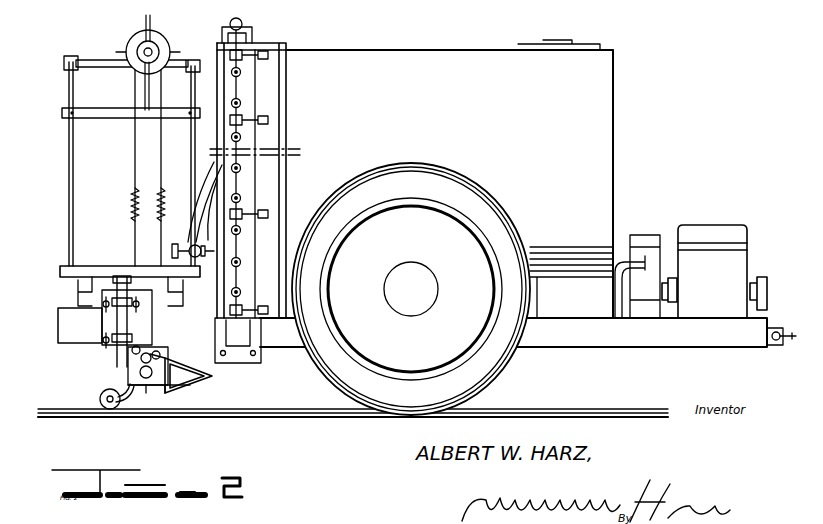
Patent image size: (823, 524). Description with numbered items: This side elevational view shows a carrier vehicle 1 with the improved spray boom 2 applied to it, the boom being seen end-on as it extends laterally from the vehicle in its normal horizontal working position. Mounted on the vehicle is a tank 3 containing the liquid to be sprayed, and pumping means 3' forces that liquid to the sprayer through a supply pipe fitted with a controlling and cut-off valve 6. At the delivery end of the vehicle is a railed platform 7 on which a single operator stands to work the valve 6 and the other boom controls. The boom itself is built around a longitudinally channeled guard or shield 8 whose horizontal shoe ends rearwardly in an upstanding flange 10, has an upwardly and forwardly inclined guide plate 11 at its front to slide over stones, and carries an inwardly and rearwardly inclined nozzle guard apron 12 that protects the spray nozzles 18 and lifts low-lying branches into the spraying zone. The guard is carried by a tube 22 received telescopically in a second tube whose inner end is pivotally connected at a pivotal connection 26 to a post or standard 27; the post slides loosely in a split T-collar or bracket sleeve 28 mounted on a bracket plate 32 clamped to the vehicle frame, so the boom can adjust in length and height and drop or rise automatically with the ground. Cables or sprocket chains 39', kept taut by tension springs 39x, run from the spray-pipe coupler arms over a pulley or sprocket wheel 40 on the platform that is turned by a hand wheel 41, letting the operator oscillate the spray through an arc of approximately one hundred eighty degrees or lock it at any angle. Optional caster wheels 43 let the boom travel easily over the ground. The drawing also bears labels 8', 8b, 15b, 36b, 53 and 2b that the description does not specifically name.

The carrier vehicle 1 is at (590, 357).
The spray boom 2 is at (192, 396).
The tank 3 is at (450, 184).
The pumping means 3' is at (691, 258).
The controlling and cut-off valve 6 is at (172, 250).
The railed platform 7 is at (90, 270).
The channeled guard or shield 8 is at (161, 419).
The filler cap 8' is at (559, 30).
The pipe fittings 8b is at (275, 204).
The upstanding flange 10 is at (128, 386).
The guide plate or fender portion 11 is at (207, 378).
The nozzle guard plate or apron 12 is at (207, 356).
The column rail 15b is at (240, 182).
The spray nozzles 18 is at (242, 105).
The tube 22 is at (410, 26).
The pivotal connection 26 is at (355, 26).
The post or standard 27 is at (100, 296).
The split T-collar or bracket sleeve 28 is at (102, 345).
The bracket plate 32 is at (100, 324).
The ball valve 36b is at (243, 26).
The cables or sprocket chains 39' is at (123, 166).
The tension springs 39x is at (133, 209).
The pulley or sprocket wheel 40 is at (160, 40).
The hand wheel 41 is at (137, 42).
The caster wheels 43 is at (111, 408).
The tank edge 53 is at (648, 41).
The column rail 2b is at (258, 78).